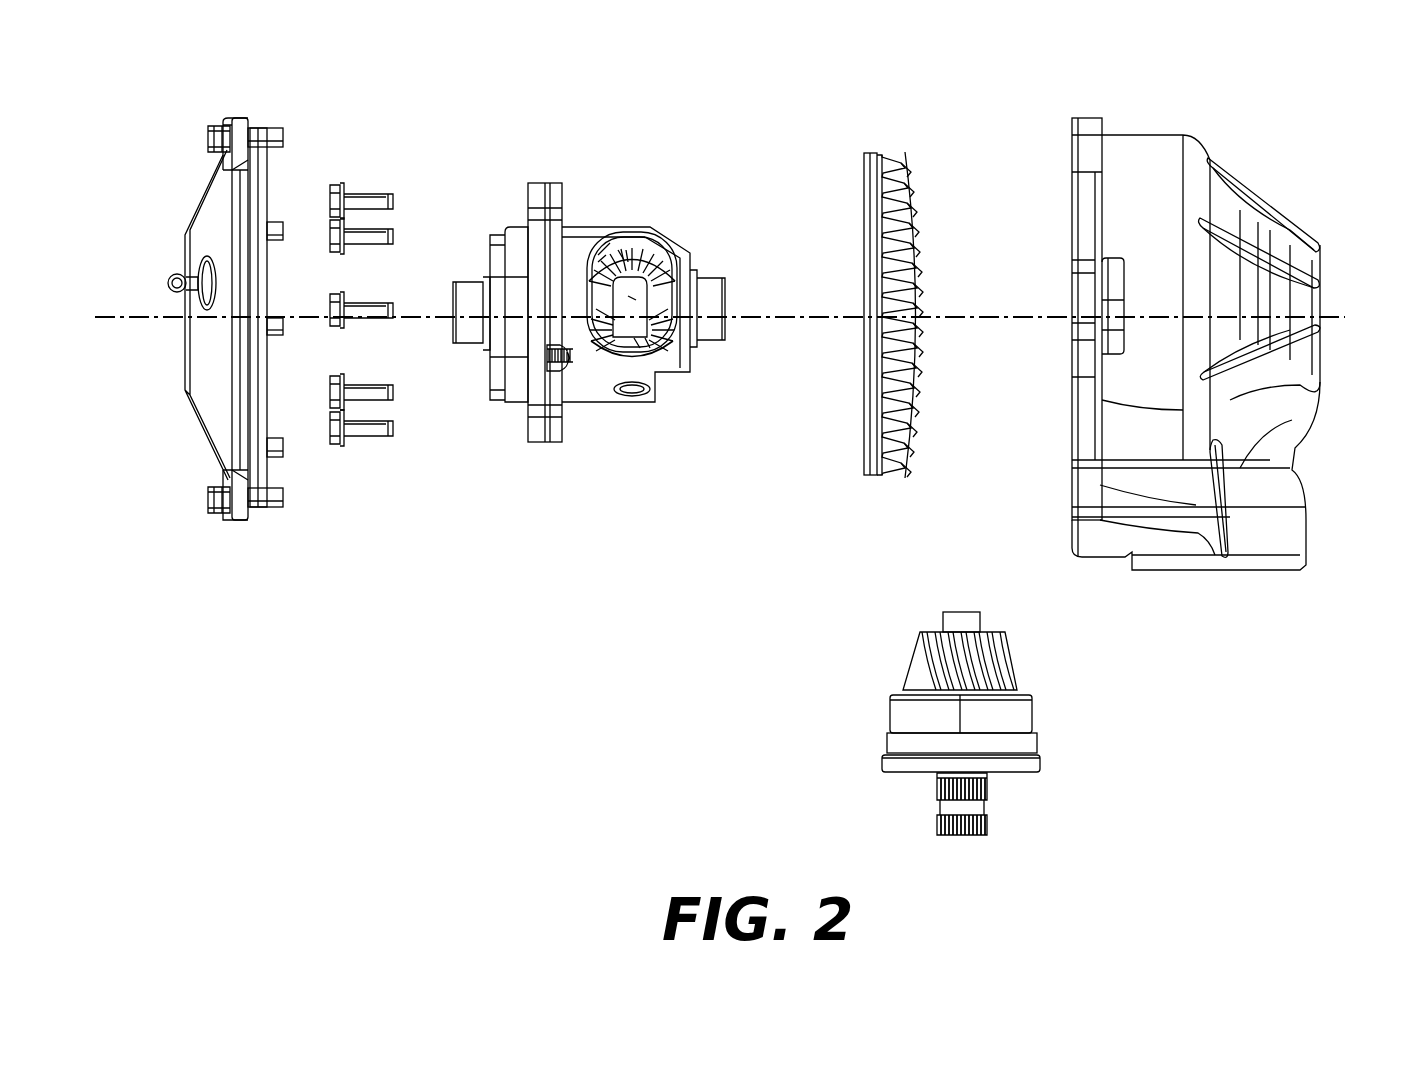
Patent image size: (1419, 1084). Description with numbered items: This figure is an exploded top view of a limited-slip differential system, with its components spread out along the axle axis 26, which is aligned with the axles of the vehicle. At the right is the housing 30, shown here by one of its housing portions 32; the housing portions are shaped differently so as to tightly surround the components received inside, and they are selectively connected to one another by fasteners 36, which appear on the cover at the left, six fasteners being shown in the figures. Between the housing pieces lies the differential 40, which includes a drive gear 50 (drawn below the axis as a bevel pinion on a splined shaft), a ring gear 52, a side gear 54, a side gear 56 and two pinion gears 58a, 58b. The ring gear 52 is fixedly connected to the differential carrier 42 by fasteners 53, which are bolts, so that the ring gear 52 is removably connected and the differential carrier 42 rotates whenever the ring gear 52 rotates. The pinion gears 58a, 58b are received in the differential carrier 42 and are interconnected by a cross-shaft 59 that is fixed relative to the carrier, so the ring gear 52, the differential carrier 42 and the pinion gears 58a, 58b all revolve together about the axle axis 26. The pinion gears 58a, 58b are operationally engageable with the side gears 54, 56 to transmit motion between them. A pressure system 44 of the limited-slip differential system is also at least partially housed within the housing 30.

The axle axis 26 is at (1346, 317).
The housing 30 is at (741, 292).
The housing portion 32 is at (1140, 152).
The fasteners 36 is at (276, 129).
The differential 40 is at (608, 316).
The differential carrier 42 is at (542, 464).
The pressure system 44 is at (387, 327).
The drive gear 50 is at (1012, 666).
The ring gear 52 is at (884, 156).
The fasteners 53 is at (384, 193).
The side gear 54 is at (597, 270).
The side gear 56 is at (648, 282).
The pinion gear 58a is at (621, 250).
The pinion gear 58b is at (640, 346).
The cross-shaft 59 is at (638, 300).